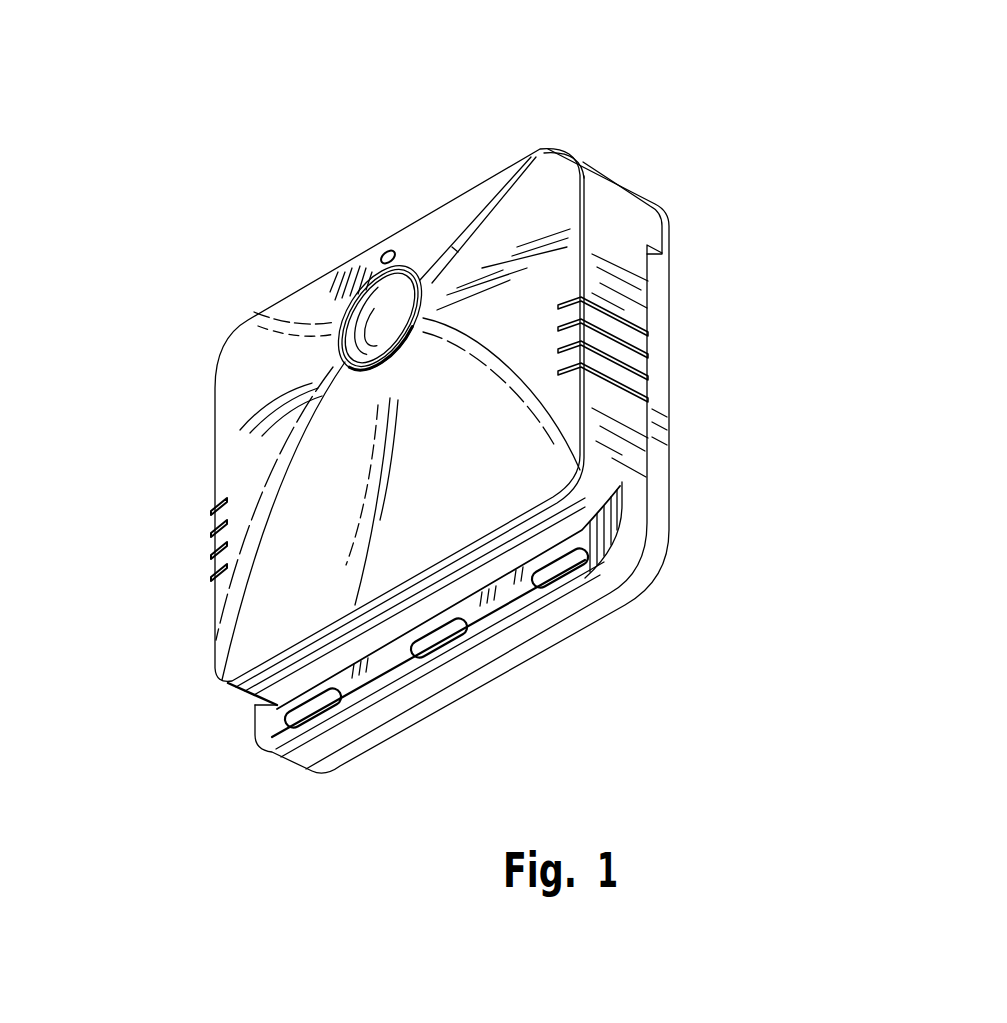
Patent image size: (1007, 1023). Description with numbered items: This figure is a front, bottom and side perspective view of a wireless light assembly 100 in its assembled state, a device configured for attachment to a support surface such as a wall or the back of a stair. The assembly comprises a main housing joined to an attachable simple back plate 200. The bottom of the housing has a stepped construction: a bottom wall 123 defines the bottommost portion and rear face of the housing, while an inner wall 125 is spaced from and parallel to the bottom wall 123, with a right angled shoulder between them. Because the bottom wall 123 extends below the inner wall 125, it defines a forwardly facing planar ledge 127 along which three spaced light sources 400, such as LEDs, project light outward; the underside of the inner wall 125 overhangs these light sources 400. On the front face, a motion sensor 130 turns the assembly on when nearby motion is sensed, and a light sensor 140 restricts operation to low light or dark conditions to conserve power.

The wireless light assembly 100 is at (440, 441).
The back plate 200 is at (655, 387).
The motion sensor 130 is at (377, 312).
The light sensor 140 is at (383, 256).
The inner wall 125 is at (302, 667).
The ledge 127 is at (270, 722).
The bottom wall 123 is at (530, 628).
The light source 400 is at (313, 703).